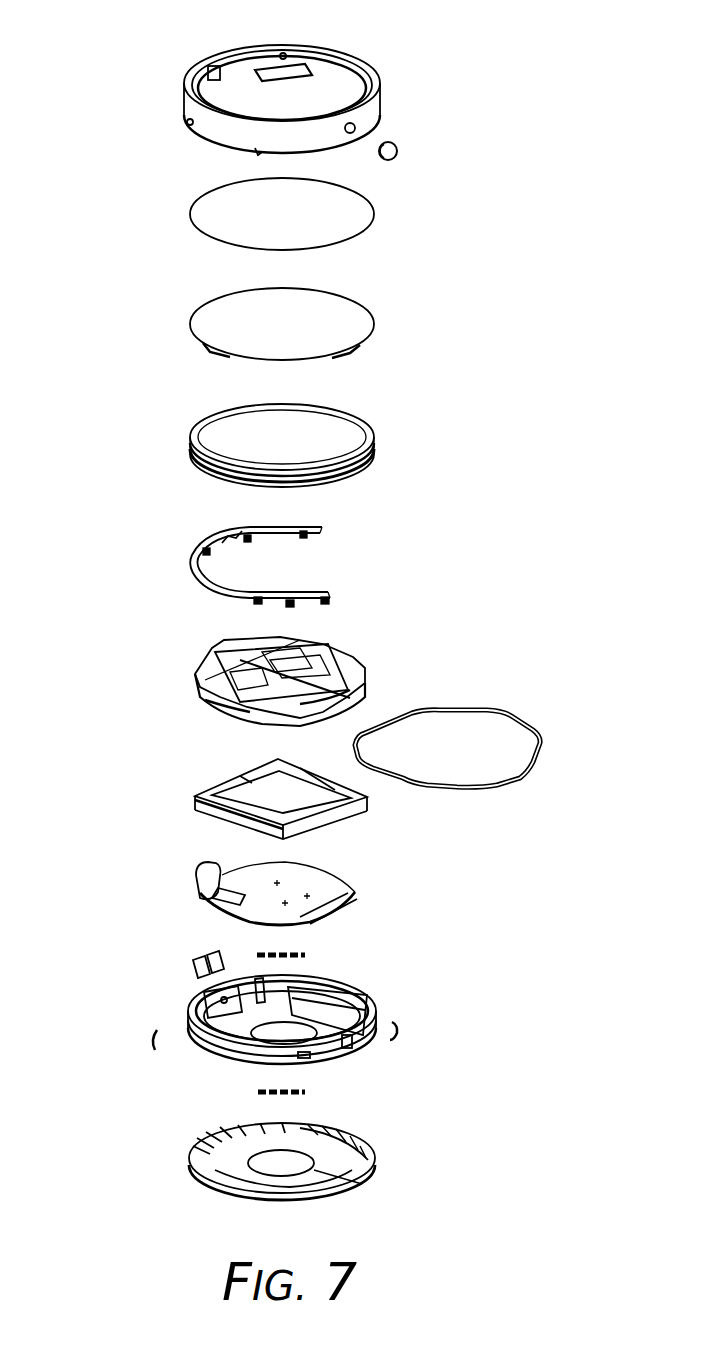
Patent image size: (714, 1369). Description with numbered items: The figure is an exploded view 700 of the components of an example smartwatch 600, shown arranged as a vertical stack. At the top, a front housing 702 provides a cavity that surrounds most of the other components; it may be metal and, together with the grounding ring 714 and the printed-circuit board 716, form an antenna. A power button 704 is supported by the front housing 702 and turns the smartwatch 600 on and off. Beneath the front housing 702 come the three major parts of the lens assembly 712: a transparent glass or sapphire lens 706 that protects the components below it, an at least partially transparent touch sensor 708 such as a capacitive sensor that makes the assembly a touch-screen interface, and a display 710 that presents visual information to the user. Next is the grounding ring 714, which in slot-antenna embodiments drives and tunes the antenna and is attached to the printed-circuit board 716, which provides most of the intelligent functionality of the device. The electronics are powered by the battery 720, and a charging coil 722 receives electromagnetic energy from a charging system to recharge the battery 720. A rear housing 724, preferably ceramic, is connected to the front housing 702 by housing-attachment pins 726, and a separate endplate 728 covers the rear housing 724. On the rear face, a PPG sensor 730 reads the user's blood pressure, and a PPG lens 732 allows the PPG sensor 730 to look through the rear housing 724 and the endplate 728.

The exploded view 700 is at (510, 62).
The smartwatch 600 is at (460, 493).
The front housing 702 is at (188, 97).
The power button 704 is at (448, 126).
The lens 706 is at (190, 210).
The touch sensor 708 is at (190, 320).
The display 710 is at (190, 447).
The lens assembly 712 is at (105, 183).
The grounding ring 714 is at (190, 565).
The printed-circuit board 716 is at (197, 675).
The battery 720 is at (197, 800).
The charging coil 722 is at (195, 880).
The rear housing 724 is at (188, 1015).
The housing-attachment pins 726 is at (398, 1028).
The endplate 728 is at (425, 1133).
The PPG sensor 730 is at (355, 900).
The PPG lens 732 is at (280, 1168).